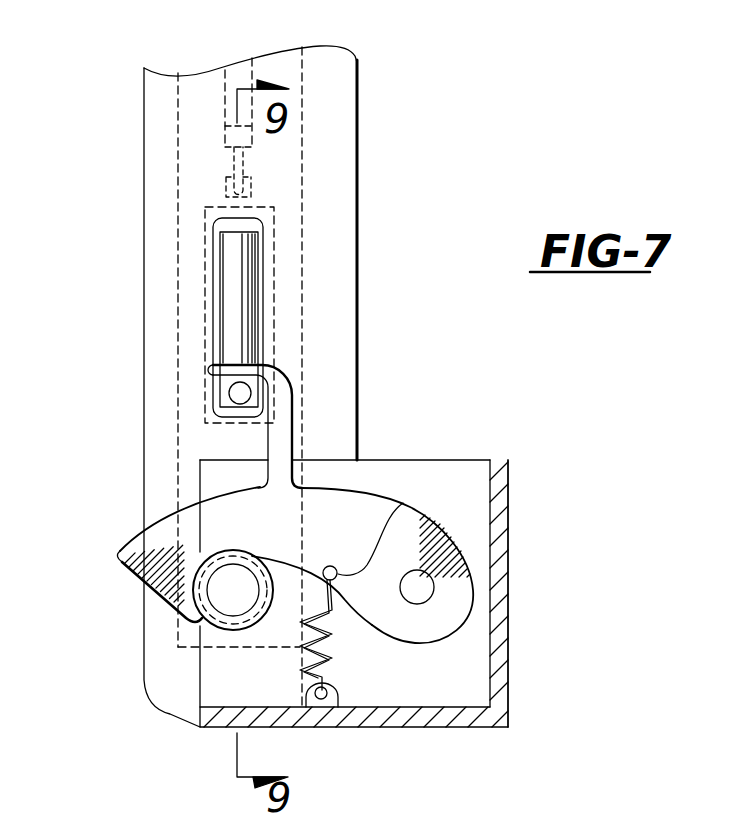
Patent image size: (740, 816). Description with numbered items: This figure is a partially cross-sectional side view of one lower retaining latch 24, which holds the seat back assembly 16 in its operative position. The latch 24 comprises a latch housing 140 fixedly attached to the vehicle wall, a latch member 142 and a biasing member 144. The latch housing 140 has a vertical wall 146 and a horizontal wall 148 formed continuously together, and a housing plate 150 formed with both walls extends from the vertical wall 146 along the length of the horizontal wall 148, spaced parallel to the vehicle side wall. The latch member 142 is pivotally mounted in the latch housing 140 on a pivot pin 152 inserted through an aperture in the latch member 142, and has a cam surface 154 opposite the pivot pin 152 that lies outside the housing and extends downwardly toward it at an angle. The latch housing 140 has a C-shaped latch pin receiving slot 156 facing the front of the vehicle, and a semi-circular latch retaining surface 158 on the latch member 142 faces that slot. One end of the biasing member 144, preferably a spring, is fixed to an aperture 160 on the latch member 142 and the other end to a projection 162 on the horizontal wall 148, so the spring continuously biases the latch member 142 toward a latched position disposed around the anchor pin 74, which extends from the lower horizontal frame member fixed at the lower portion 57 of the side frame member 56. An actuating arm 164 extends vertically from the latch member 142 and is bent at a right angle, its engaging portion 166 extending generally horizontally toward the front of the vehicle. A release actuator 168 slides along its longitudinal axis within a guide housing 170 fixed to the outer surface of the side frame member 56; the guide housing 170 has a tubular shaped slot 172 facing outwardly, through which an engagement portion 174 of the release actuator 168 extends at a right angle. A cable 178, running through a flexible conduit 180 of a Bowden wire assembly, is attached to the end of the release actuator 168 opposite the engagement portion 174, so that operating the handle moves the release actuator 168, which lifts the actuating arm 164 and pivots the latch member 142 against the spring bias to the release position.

The seat back assembly 16 is at (433, 142).
The lower retaining latch 24 is at (523, 462).
The side frame member 56 is at (178, 186).
The lower portion 57 is at (178, 476).
The anchor pin 74 is at (200, 620).
The latch housing 140 is at (507, 693).
The latch member 142 is at (119, 551).
The biasing member 144 is at (337, 656).
The vertical wall 146 is at (508, 543).
The horizontal wall 148 is at (450, 728).
The housing plate 150 is at (401, 480).
The pivot pin 152 is at (421, 603).
The cam surface 154 is at (200, 620).
The latch pin receiving slot 156 is at (282, 590).
The latch retaining surface 158 is at (200, 613).
The aperture 160 is at (403, 504).
The projection 162 is at (312, 697).
The actuating arm 164 is at (292, 408).
The engaging portion 166 is at (212, 368).
The release actuator 168 is at (253, 268).
The guide housing 170 is at (277, 220).
The slot 172 is at (258, 326).
The engagement portion 174 is at (234, 394).
The cable 178 is at (245, 163).
The flexible conduit 180 is at (225, 96).